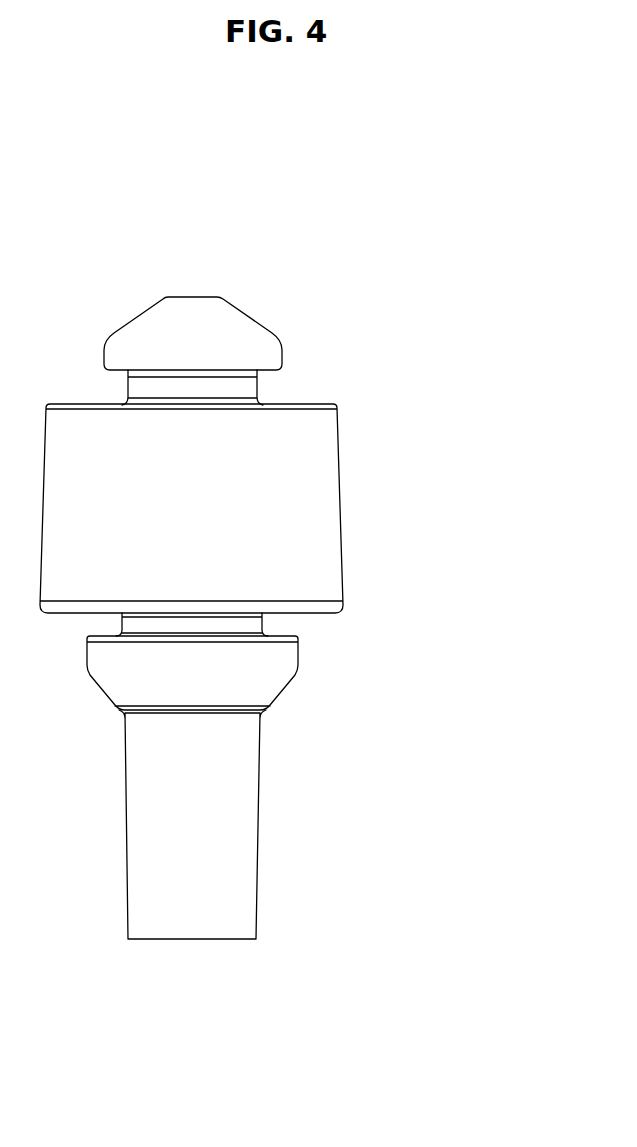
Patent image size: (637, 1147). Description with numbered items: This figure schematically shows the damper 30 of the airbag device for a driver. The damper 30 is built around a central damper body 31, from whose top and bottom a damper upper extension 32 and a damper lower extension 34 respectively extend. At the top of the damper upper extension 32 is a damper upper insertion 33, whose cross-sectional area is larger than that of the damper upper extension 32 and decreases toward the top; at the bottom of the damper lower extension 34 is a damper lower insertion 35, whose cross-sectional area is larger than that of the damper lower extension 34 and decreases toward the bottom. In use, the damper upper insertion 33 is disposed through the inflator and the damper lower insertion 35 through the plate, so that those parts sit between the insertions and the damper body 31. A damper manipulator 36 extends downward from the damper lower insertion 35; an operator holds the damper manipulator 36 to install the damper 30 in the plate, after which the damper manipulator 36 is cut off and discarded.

The damper 30 is at (497, 167).
The damper body 31 is at (341, 504).
The damper upper extension 32 is at (257, 388).
The damper upper insertion 33 is at (253, 322).
The damper lower extension 34 is at (262, 625).
The damper lower insertion 35 is at (285, 685).
The damper manipulator 36 is at (258, 831).